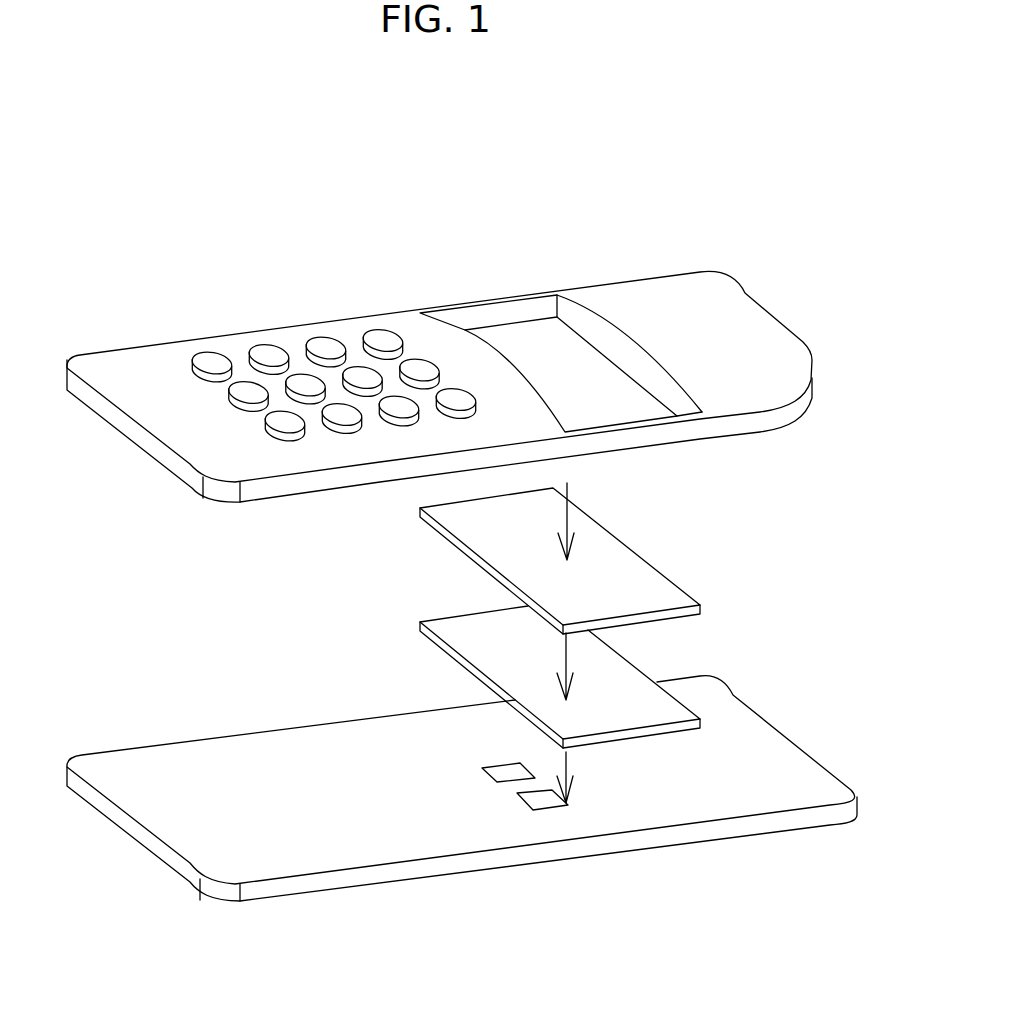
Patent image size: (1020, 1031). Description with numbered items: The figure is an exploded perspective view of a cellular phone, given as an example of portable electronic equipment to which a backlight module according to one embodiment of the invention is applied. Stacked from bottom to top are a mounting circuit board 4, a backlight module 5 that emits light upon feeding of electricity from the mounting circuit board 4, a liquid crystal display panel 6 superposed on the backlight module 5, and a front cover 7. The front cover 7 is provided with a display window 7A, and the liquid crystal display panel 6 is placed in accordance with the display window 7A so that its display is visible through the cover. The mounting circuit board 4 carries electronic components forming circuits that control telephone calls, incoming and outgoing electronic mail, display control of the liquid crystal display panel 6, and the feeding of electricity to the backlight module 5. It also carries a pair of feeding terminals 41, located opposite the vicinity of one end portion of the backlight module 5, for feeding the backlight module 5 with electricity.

The mounting circuit board 4 is at (753, 707).
The feeding terminals 41 is at (495, 780).
The backlight module 5 is at (637, 665).
The liquid crystal display panel 6 is at (630, 543).
The front cover 7 is at (812, 376).
The display window 7A is at (488, 313).